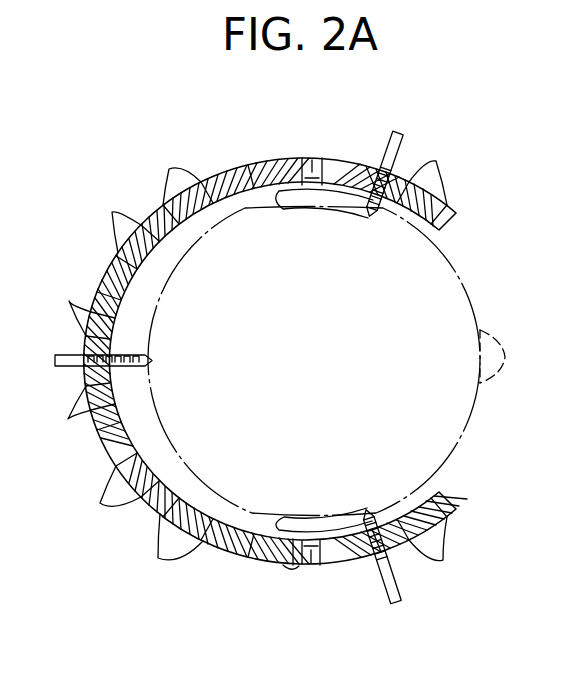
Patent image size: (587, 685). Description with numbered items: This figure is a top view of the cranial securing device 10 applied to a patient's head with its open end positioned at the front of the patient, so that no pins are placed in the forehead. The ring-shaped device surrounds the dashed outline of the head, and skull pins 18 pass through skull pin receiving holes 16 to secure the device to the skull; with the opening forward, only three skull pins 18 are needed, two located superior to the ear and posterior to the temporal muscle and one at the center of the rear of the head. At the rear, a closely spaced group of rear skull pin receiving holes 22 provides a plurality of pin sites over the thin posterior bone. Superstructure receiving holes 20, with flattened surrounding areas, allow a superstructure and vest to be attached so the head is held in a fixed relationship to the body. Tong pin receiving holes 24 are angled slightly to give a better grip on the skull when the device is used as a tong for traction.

The cranial securing device 10 is at (248, 163).
The skull pin receiving holes 16 is at (169, 170).
The skull pins 18 is at (54, 360).
The superstructure receiving holes 20 is at (318, 157).
The rear skull pin receiving holes 22 is at (68, 302).
The tong pin receiving holes 24 is at (358, 162).